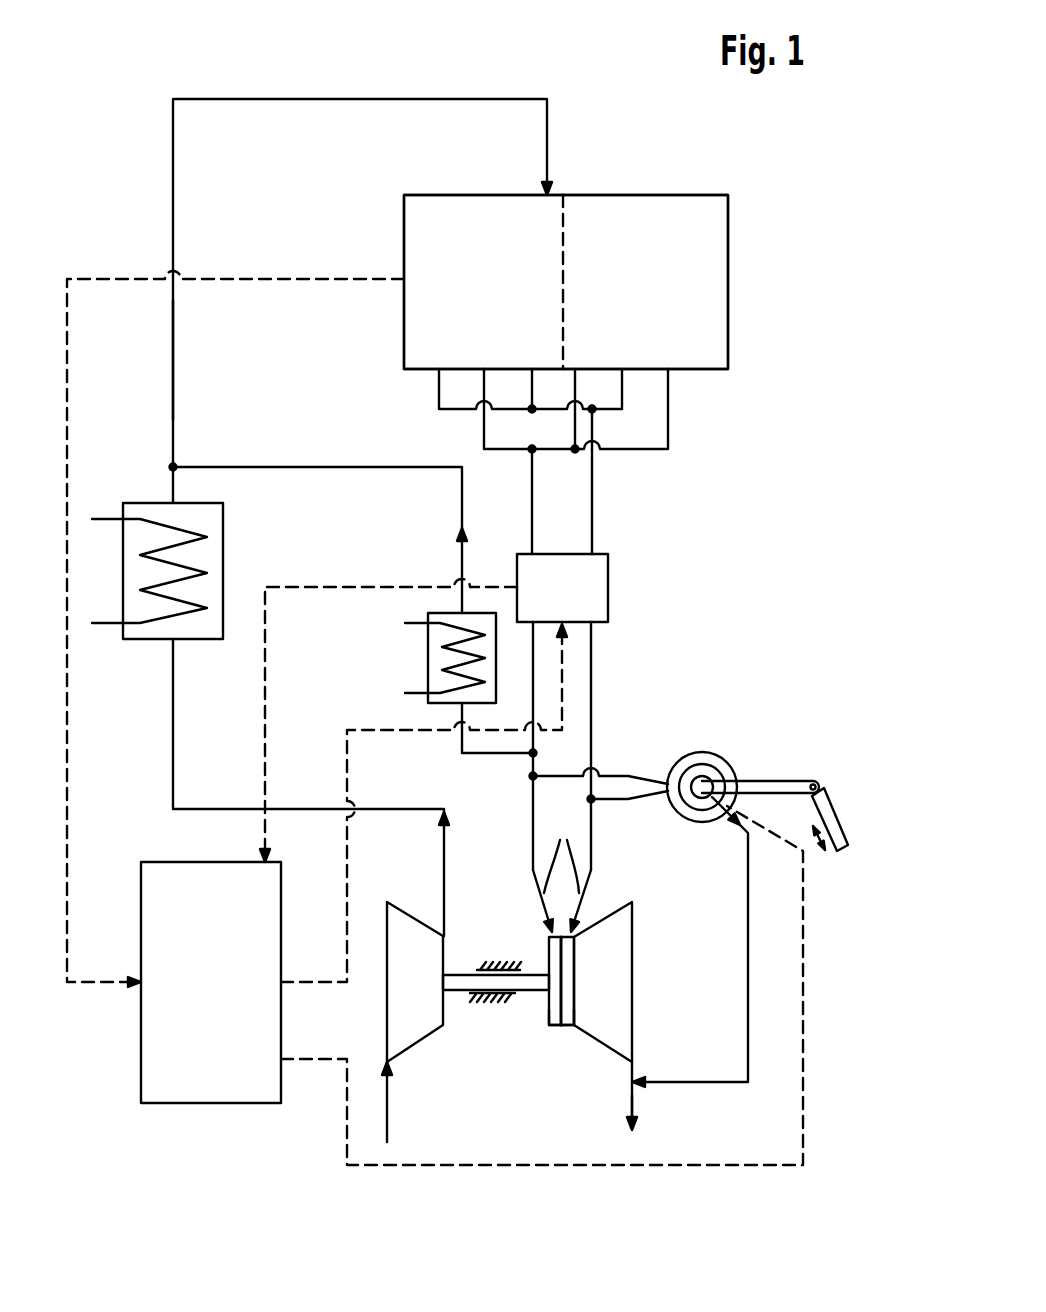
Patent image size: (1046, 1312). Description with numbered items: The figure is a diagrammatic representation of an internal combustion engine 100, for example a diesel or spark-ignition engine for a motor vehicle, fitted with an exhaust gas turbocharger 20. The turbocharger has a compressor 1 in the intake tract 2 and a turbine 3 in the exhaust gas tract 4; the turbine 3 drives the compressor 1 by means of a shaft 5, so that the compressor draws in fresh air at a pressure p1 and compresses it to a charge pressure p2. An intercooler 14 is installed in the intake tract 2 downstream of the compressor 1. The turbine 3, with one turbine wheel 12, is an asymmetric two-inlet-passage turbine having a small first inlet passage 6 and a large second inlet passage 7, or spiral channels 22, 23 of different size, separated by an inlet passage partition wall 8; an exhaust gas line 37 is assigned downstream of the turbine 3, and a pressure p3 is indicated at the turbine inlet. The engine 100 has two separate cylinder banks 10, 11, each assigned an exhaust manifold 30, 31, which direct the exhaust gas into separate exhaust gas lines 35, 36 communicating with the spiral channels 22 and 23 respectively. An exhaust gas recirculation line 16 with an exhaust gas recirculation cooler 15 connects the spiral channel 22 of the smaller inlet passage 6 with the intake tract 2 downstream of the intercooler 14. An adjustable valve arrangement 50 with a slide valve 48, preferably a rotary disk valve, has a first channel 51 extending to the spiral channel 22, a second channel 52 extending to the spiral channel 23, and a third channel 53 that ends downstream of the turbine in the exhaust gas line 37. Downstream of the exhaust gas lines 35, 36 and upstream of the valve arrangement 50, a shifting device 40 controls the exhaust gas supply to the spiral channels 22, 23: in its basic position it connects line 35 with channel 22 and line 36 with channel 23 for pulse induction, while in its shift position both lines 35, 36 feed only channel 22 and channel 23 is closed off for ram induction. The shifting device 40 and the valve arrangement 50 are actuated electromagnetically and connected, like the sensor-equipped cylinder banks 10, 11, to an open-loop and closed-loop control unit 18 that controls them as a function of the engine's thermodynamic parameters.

The internal combustion engine 100 is at (576, 180).
The cylinder bank 10 is at (496, 302).
The cylinder bank 11 is at (658, 302).
The exhaust manifold 30 is at (622, 388).
The exhaust manifold 31 is at (668, 430).
The exhaust gas line 35 is at (532, 468).
The exhaust gas line 36 is at (593, 495).
The exhaust gas tract 4 is at (586, 481).
The shifting device 40 is at (575, 602).
The intake tract 2 is at (173, 152).
The charge pressure p2 is at (173, 360).
The exhaust gas recirculation line 16 is at (360, 467).
The intercooler 14 is at (152, 640).
The exhaust gas recirculation cooler 15 is at (437, 672).
The open-loop and closed-loop control unit 18 is at (213, 1104).
The spiral channel 22 is at (532, 792).
The spiral channel 23 is at (592, 848).
The pressure p3 is at (561, 850).
The first channel 51 is at (614, 776).
The second channel 52 is at (612, 800).
The slide valve 48 is at (692, 752).
The valve arrangement 50 is at (727, 742).
The third channel 53 is at (748, 988).
The compressor 1 is at (418, 990).
The fresh air pressure p1 is at (388, 1100).
The shaft 5 is at (461, 982).
The exhaust gas turbocharger 20 is at (500, 934).
The inlet passage partition wall 8 is at (560, 1002).
The first inlet passage 6 is at (552, 1027).
The second inlet passage 7 is at (570, 1027).
The turbine 3 is at (609, 990).
The turbine wheel 12 is at (620, 1023).
The exhaust gas line 37 is at (634, 1098).